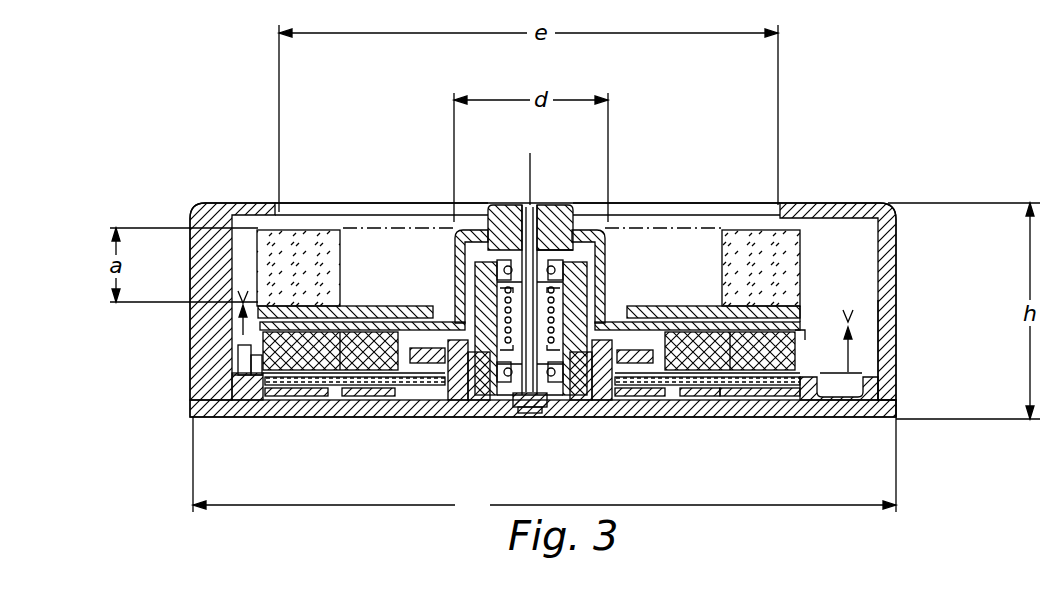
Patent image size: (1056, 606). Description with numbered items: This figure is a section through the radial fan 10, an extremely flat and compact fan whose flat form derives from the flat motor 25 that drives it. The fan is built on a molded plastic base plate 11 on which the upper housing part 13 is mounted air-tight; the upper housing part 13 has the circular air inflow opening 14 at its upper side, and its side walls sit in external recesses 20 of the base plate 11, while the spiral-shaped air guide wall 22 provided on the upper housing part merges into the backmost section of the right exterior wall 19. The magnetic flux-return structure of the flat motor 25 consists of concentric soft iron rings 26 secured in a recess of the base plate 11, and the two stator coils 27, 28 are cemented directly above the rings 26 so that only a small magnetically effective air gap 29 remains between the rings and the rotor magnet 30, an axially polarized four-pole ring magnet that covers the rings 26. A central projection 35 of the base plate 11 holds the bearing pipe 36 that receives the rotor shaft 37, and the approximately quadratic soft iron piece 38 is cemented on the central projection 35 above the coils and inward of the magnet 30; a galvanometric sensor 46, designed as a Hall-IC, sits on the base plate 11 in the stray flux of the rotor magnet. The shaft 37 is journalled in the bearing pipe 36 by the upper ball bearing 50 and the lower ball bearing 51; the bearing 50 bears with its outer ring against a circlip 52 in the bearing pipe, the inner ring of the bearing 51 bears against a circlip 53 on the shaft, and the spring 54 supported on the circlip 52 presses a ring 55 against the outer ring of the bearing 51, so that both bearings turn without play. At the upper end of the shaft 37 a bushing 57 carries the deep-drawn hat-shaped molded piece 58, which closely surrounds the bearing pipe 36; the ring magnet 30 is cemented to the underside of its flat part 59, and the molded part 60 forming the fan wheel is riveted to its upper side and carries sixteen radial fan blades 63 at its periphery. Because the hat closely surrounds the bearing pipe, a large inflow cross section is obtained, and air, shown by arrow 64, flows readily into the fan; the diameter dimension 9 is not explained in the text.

The diameter dimension 9 is at (544, 467).
The radial fan 10 is at (183, 202).
The base plate 11 is at (835, 418).
The upper housing part 13 is at (893, 264).
The air inflow opening 14 is at (756, 207).
The right exterior wall 19 is at (893, 355).
The external recesses 20 is at (893, 408).
The spiral-shaped air guide wall 22 is at (247, 215).
The flat motor 25 is at (816, 326).
The concentric rings 26 is at (720, 400).
The coil 27 is at (287, 400).
The coil 28 is at (640, 400).
The air gap 29 is at (675, 400).
The rotor magnet 30 is at (798, 345).
The central projection 35 is at (457, 400).
The bearing pipe 36 is at (470, 270).
The rotor shaft 37 is at (533, 203).
The soft iron piece 38 is at (428, 346).
The galvanometric sensor 46 is at (248, 360).
The upper ball bearing 50 is at (484, 214).
The lower ball bearing 51 is at (502, 400).
The circlip 52 is at (590, 275).
The circlip 53 is at (548, 413).
The spring 54 is at (590, 305).
The ring 55 is at (574, 400).
The bushing 57 is at (562, 207).
The hat-shaped molded piece 58 is at (630, 240).
The flat part 59 is at (680, 325).
The molded part 60 is at (815, 252).
The radial fan blades 63 is at (312, 236).
The arrow 64 is at (380, 254).